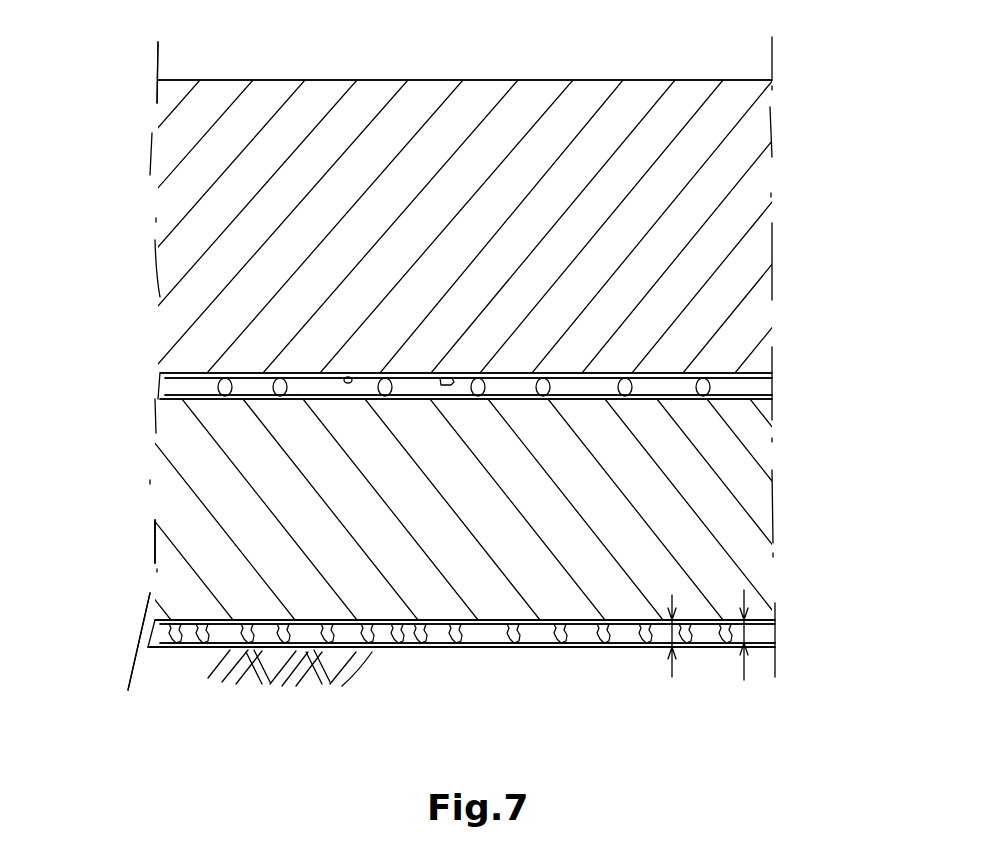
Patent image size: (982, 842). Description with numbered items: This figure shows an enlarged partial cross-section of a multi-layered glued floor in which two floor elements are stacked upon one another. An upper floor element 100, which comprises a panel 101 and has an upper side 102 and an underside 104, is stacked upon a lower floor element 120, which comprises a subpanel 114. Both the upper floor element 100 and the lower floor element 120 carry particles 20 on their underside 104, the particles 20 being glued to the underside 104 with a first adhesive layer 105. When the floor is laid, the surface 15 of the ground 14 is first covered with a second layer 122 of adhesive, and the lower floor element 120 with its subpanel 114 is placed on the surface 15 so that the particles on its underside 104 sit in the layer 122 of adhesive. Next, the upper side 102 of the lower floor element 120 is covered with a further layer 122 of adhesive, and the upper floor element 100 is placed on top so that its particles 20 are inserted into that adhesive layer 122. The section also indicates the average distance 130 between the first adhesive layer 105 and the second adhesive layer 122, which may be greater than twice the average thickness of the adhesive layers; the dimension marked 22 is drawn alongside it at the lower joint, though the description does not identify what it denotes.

The floor element 100 is at (168, 207).
The panel 101 is at (168, 145).
The upper side 102 is at (439, 78).
The underside 104 is at (737, 373).
The first adhesive layer 105 is at (173, 372).
The subpanel 114 is at (175, 522).
The lower floor element 120 is at (162, 465).
The second layer of adhesive 122 is at (157, 403).
The ground 14 is at (443, 702).
The surface of the ground 15 is at (383, 650).
The particles 20 is at (193, 642).
The layer thickness 22 is at (665, 633).
The average distance 130 is at (738, 637).